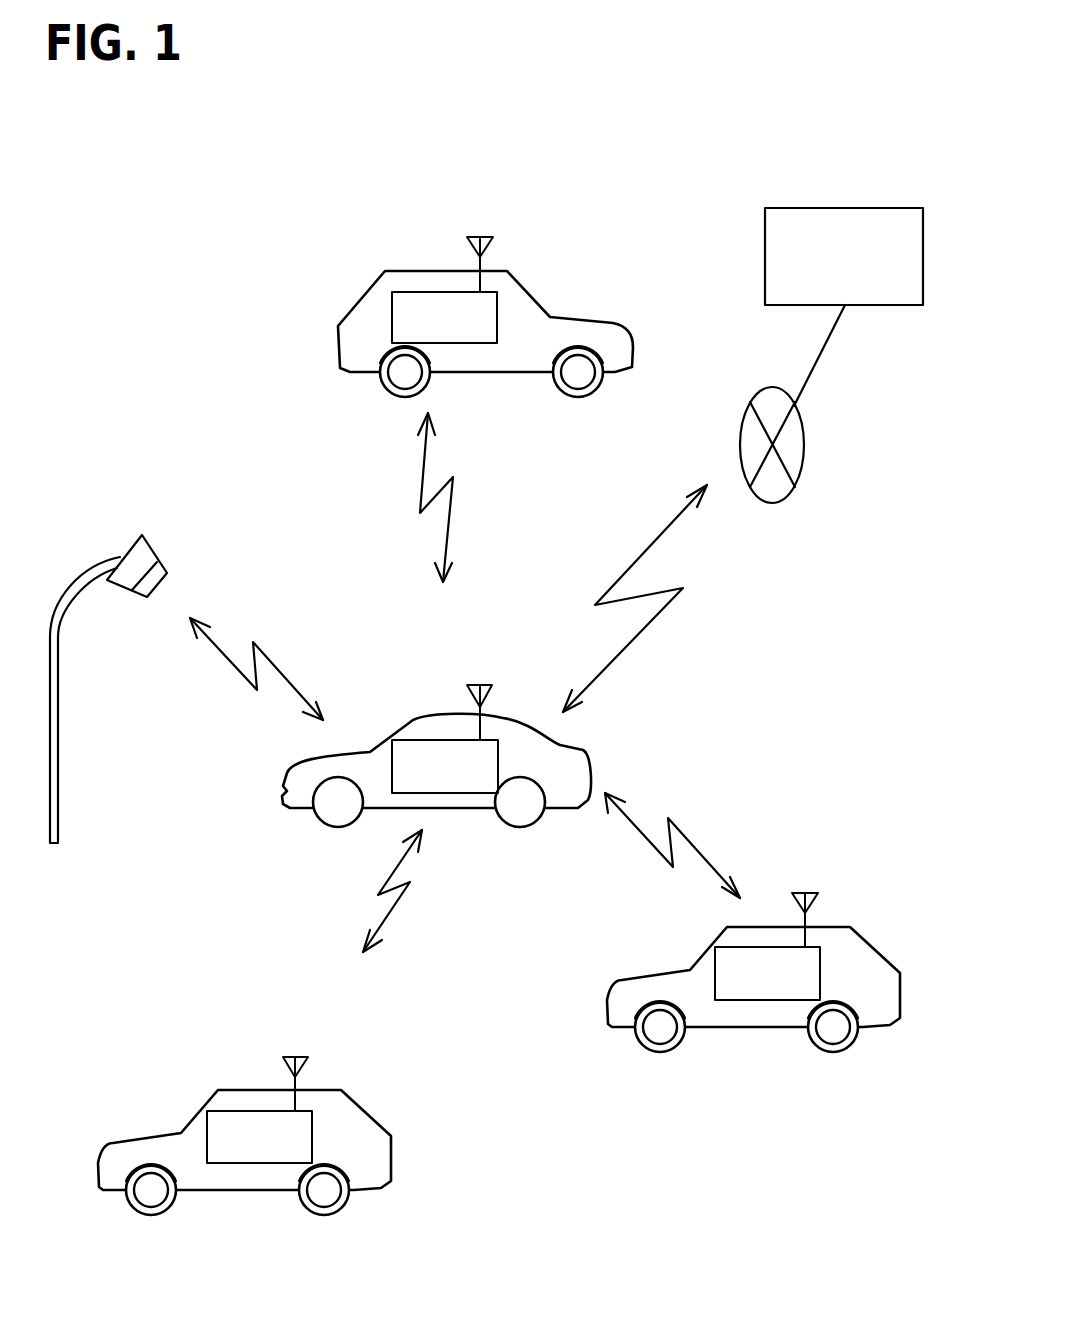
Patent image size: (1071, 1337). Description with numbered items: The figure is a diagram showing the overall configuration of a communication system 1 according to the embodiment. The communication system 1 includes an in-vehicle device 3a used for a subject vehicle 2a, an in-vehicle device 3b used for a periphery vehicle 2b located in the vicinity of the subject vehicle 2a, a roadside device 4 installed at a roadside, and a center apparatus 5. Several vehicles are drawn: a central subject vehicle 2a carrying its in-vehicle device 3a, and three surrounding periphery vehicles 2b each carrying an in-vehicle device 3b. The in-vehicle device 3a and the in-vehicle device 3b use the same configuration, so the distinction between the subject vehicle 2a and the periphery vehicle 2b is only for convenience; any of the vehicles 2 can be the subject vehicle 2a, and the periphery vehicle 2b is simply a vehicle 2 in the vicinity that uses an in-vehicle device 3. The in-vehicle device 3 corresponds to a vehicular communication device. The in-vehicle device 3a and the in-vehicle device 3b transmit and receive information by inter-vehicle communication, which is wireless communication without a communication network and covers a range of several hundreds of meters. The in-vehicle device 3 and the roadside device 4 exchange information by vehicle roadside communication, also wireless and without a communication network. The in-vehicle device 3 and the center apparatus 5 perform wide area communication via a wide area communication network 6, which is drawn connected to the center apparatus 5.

The communication system 1 is at (834, 107).
The vehicle 2 is at (499, 701).
The subject vehicle 2a is at (503, 717).
The periphery vehicle 2b is at (500, 270).
The in-vehicle device 3 is at (522, 662).
The in-vehicle device 3a is at (437, 740).
The in-vehicle device 3b is at (437, 290).
The roadside device 4 is at (127, 552).
The center apparatus 5 is at (867, 207).
The wide area communication network 6 is at (803, 433).